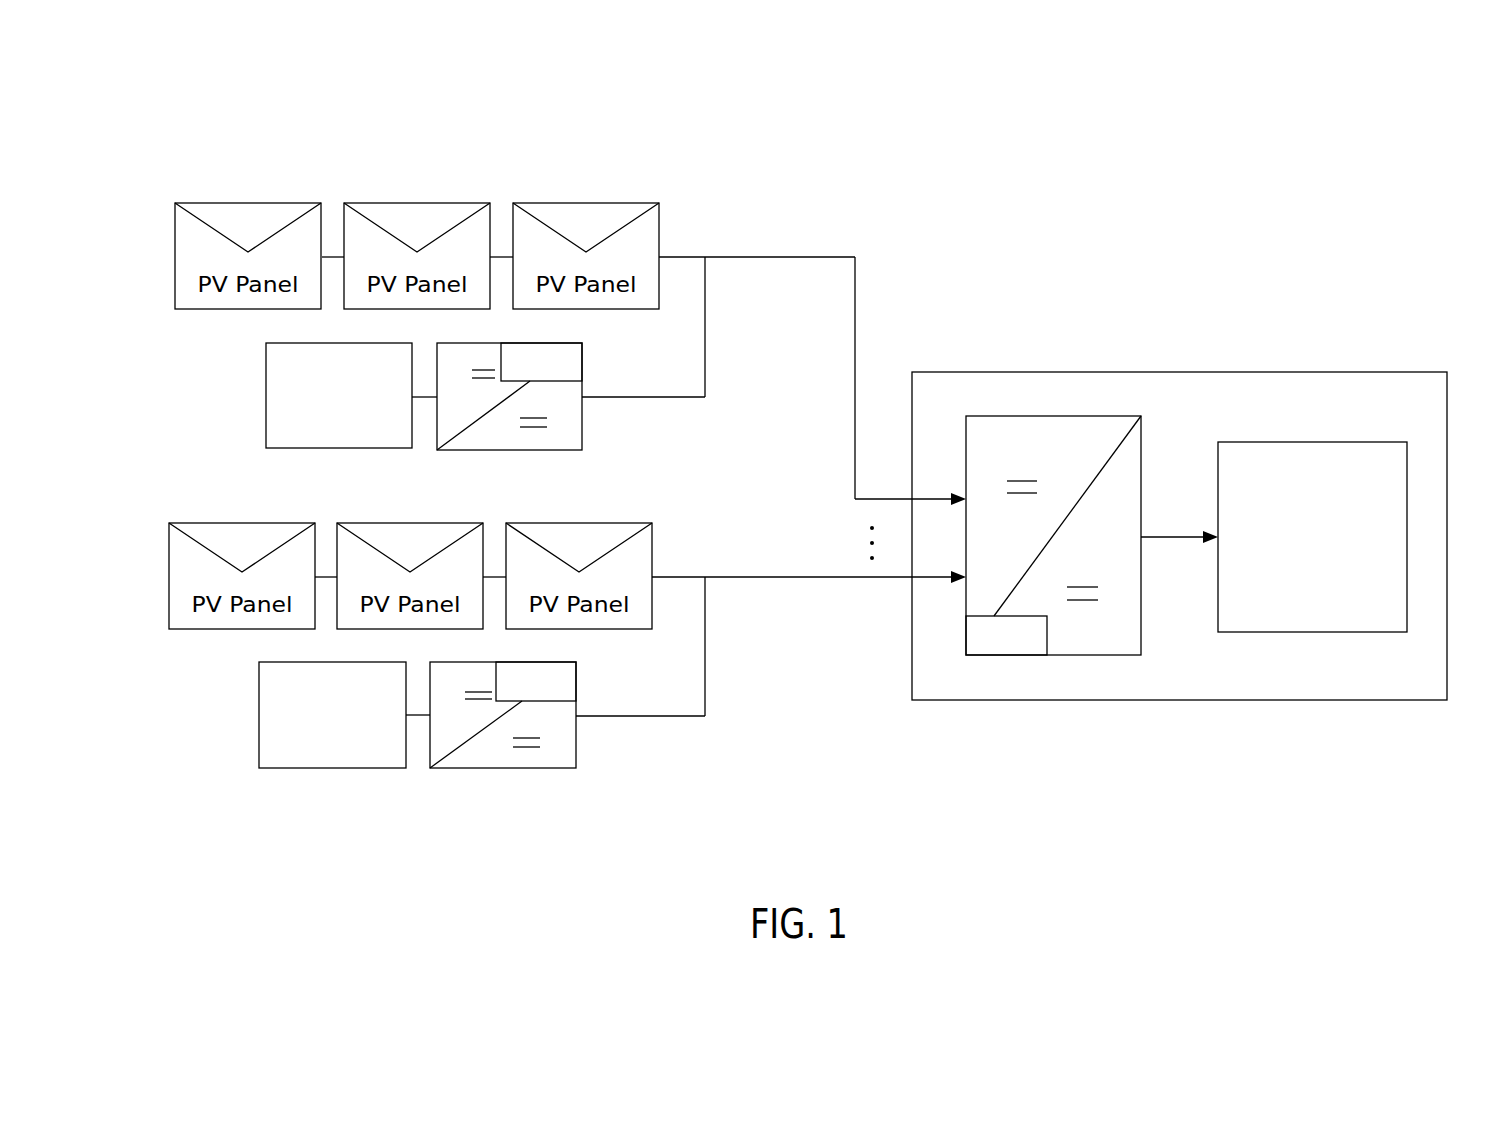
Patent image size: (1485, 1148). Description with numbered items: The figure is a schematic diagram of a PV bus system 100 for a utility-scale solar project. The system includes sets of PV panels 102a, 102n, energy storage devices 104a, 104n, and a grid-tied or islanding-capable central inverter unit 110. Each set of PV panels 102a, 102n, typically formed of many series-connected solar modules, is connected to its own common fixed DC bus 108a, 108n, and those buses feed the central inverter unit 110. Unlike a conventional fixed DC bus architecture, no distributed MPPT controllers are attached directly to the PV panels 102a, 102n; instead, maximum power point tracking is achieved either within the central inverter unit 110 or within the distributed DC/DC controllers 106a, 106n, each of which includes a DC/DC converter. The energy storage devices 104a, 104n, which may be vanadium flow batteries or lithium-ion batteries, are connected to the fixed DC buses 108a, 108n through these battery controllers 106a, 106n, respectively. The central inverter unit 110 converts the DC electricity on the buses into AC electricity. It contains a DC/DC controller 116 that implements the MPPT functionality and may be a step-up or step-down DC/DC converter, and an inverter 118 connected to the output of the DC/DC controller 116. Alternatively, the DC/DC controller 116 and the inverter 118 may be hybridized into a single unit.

The PV bus system 100 is at (197, 95).
The PV panels 102a is at (248, 203).
The PV panels 102n is at (243, 523).
The energy storage device 104a is at (266, 397).
The energy storage device 104n is at (333, 768).
The battery controller 106a is at (582, 400).
The battery controller 106n is at (504, 768).
The fixed DC bus 108a is at (833, 257).
The fixed DC bus 108n is at (718, 577).
The central inverter unit 110 is at (1180, 372).
The DC/DC controller 116 is at (1055, 416).
The inverter 118 is at (1313, 442).